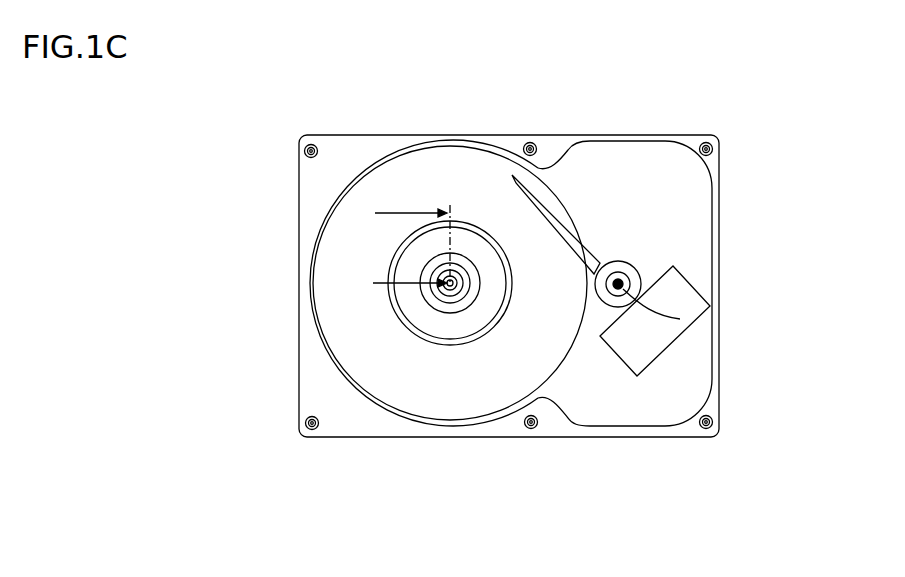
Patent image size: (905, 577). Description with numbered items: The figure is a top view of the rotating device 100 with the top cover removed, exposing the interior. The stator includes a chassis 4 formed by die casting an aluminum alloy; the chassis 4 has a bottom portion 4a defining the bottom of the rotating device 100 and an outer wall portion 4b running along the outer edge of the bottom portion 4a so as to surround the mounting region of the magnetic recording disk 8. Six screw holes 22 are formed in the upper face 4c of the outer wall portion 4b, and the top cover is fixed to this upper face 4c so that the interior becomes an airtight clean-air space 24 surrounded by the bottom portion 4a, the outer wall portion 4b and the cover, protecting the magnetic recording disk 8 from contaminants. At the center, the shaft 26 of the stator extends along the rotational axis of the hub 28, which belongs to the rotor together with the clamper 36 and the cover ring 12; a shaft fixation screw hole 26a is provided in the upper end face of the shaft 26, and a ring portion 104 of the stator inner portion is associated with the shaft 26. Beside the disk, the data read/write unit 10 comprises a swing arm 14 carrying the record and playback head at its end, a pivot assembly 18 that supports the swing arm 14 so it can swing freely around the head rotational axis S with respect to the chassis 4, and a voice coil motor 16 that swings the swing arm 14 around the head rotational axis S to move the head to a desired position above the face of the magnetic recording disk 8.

The rotating device 100 is at (531, 532).
The chassis 4 is at (722, 185).
The bottom portion 4a is at (582, 158).
The outer wall portion 4b is at (362, 160).
The upper face 4c is at (300, 185).
The magnetic recording disk 8 is at (447, 170).
The data read/write unit 10 is at (663, 275).
The cover ring 12 is at (440, 302).
The swing arm 14 is at (594, 246).
The voice coil motor 16 is at (684, 303).
The pivot assembly 18 is at (632, 273).
The screw holes 22 is at (311, 144).
The clean-air space 24 is at (637, 158).
The shaft 26 is at (445, 287).
The shaft fixation screw hole 26a is at (444, 289).
The hub 28 is at (413, 311).
The clamper 36 is at (465, 340).
The ring portion 104 is at (443, 278).
The head rotational axis S is at (680, 319).